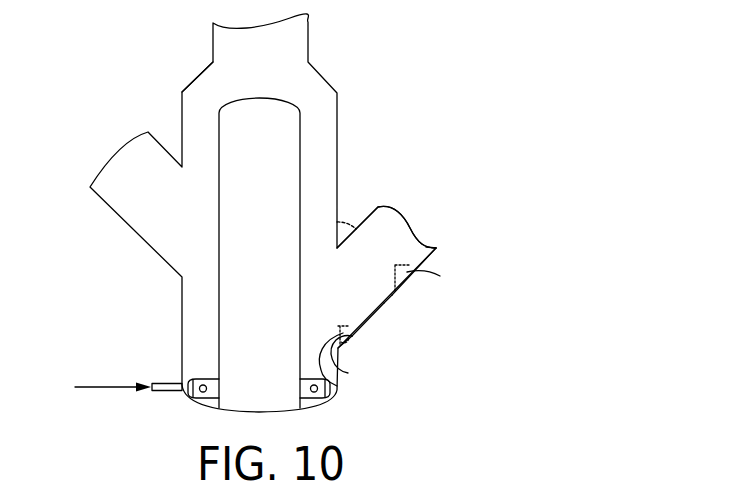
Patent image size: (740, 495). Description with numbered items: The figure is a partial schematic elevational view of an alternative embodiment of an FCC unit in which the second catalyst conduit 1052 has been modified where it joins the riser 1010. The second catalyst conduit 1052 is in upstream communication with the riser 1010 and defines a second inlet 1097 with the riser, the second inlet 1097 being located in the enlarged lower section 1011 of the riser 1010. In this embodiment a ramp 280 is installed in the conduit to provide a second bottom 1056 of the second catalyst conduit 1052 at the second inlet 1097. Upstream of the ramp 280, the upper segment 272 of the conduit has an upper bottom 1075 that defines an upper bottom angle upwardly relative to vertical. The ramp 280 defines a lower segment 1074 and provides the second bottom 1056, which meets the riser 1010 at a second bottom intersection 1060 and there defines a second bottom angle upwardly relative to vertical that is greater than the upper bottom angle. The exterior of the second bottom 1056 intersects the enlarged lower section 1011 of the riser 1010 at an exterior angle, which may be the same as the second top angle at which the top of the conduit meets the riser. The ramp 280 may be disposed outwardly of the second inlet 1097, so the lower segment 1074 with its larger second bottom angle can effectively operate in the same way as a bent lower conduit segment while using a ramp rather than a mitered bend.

The riser 1010 is at (396, 132).
The enlarged lower section 1011 is at (181, 105).
The second inlet 1097 is at (330, 293).
The upper segment 272 is at (436, 248).
The second catalyst conduit 1052 is at (392, 295).
The upper bottom 1075 is at (385, 302).
The ramp 280 is at (352, 335).
The second bottom 1056 is at (350, 337).
The lower segment 1074 is at (348, 341).
The second bottom intersection 1060 is at (348, 373).